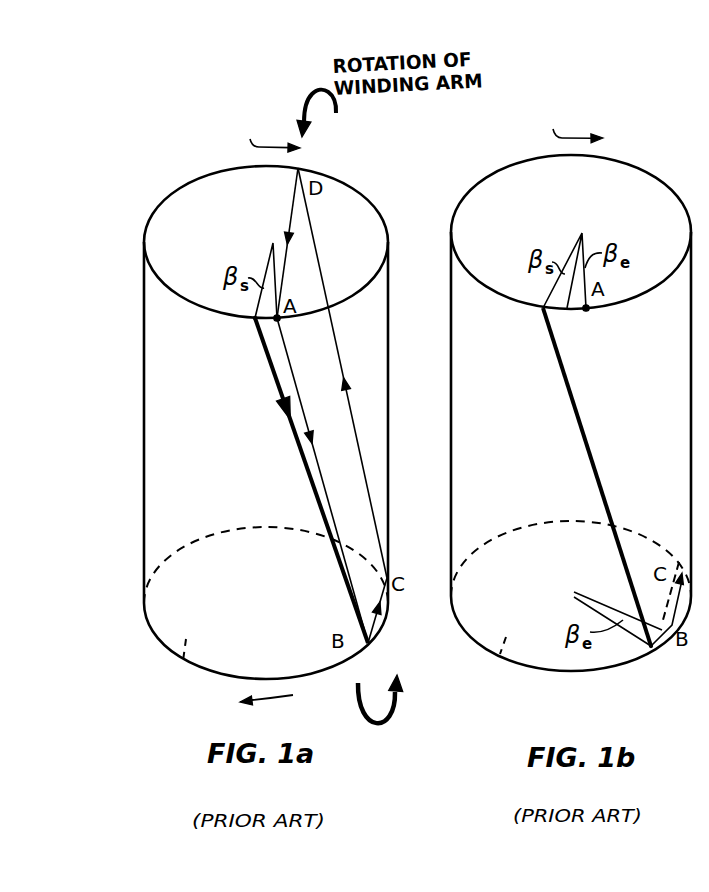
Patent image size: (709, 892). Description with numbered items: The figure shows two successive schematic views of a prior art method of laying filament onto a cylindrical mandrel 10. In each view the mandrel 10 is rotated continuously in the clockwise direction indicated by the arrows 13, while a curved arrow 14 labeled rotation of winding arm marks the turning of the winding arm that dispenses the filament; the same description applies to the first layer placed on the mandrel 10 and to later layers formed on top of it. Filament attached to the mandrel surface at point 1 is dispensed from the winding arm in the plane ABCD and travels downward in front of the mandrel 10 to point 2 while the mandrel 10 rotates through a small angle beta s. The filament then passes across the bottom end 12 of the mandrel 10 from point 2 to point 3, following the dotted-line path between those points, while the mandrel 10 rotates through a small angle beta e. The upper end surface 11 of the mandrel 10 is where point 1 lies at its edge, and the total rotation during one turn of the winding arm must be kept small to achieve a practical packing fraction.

In FIG. 1A, the mandrel 10 is at (144, 405).
In FIG. 1B, the mandrel 10 is at (452, 398).
In FIG. 1A, the end surface 11 is at (186, 208).
In FIG. 1B, the end surface 11 is at (499, 188).
In FIG. 1A, the bottom end 12 is at (181, 664).
In FIG. 1B, the bottom end 12 is at (503, 654).
In FIG. 1A, the arrows 13 is at (267, 134).
In FIG. 1B, the arrows 13 is at (571, 123).
In FIG. 1A, the rotation direction of winding arm 14 is at (313, 89).
In FIG. 1A, the point 1 is at (304, 443).
In FIG. 1B, the point 1 is at (590, 439).
In FIG. 1A, the point 2 is at (330, 495).
In FIG. 1B, the point 2 is at (619, 635).
In FIG. 1B, the point 3 is at (680, 604).